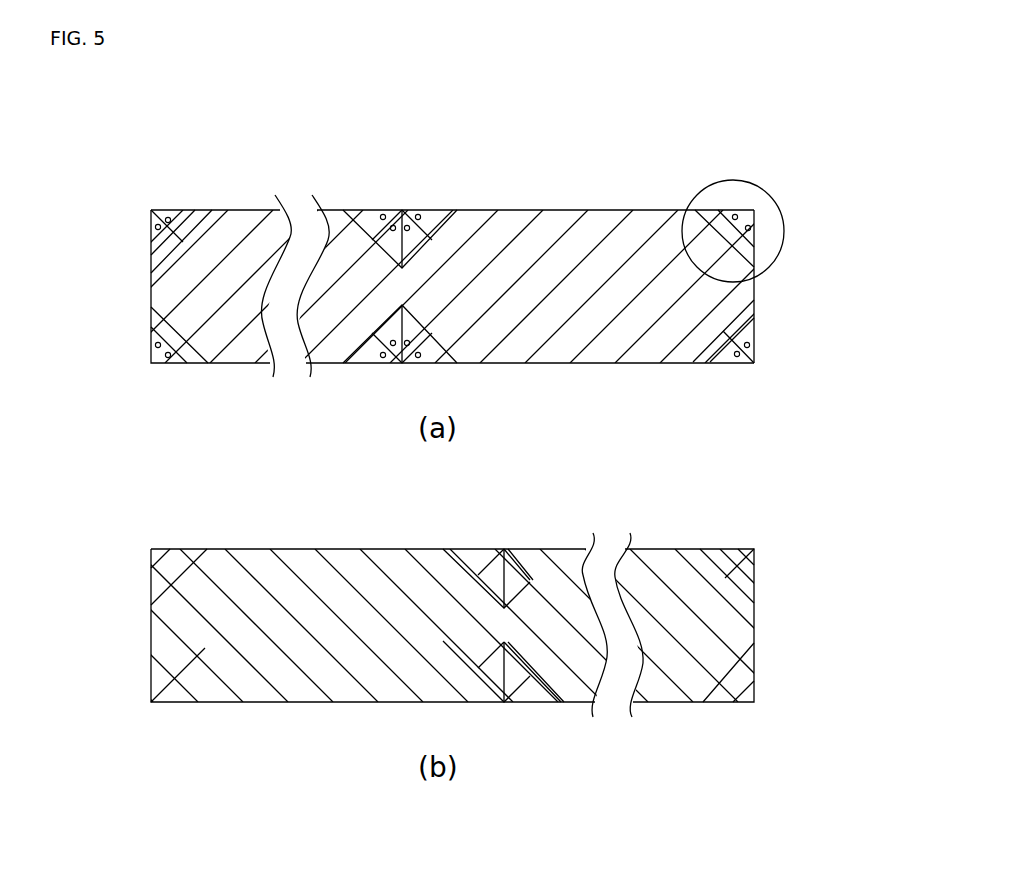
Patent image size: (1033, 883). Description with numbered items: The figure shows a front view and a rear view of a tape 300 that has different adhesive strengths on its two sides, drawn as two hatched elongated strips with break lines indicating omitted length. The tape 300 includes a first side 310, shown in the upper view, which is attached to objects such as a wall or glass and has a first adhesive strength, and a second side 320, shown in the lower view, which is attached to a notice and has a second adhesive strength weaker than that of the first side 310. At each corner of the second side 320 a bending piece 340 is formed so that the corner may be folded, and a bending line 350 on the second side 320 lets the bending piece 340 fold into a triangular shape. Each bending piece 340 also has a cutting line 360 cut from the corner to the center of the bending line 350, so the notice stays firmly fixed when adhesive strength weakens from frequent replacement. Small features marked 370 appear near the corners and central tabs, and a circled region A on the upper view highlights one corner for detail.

The tape 300 is at (92, 115).
The first side 310 is at (585, 212).
The second side 320 is at (280, 702).
The bending piece 340 is at (749, 330).
The bending line 350 is at (720, 363).
The cutting line 360 is at (757, 350).
The via holes 370 is at (742, 363).
The detail region A is at (776, 178).